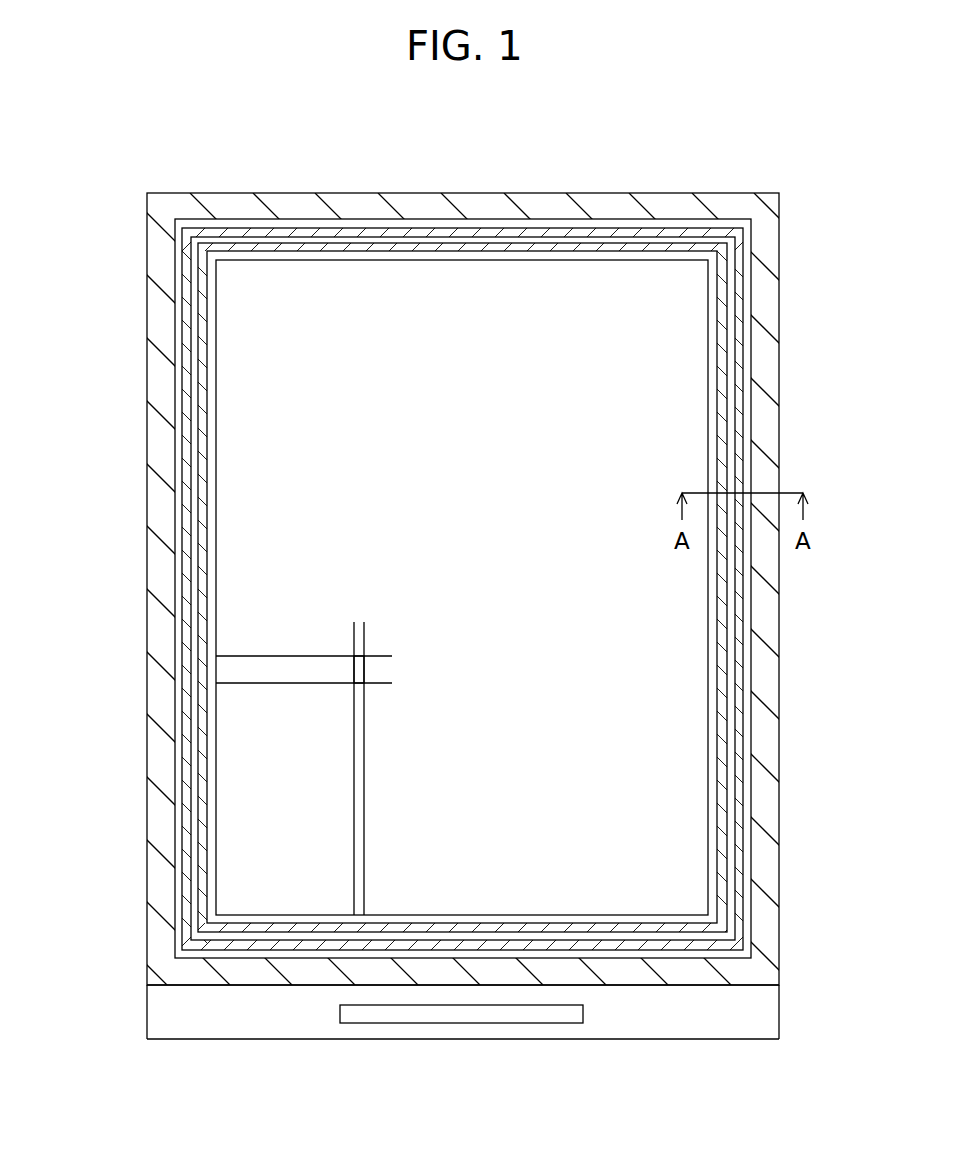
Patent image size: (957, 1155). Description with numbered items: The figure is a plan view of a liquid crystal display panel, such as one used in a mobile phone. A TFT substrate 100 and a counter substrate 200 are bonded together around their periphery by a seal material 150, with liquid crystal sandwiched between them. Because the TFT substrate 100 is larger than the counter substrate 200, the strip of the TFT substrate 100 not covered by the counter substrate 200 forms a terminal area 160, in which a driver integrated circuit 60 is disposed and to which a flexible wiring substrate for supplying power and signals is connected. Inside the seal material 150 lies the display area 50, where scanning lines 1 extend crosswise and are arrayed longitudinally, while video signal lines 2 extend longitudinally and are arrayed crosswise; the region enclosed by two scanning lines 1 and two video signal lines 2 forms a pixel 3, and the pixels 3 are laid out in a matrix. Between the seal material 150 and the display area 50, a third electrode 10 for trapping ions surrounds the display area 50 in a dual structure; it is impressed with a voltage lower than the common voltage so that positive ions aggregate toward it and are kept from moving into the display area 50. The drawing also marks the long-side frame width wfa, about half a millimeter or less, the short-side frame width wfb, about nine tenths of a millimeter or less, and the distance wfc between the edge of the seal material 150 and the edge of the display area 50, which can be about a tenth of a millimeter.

The scanning line 1 is at (293, 655).
The video signal line 2 is at (365, 640).
The pixel 3 is at (360, 668).
The third electrode 10 is at (723, 340).
The display area 50 is at (647, 672).
The driver integrated circuit (IC) 60 is at (500, 1022).
The TFT substrate 100 is at (779, 1011).
The seal material 150 is at (768, 606).
The terminal area 160 is at (693, 1023).
The counter substrate 200 is at (779, 871).
The long-side frame width wfa is at (227, 510).
The short-side frame width wfb is at (374, 271).
The distance between seal material edge and display area edge wfc is at (227, 622).